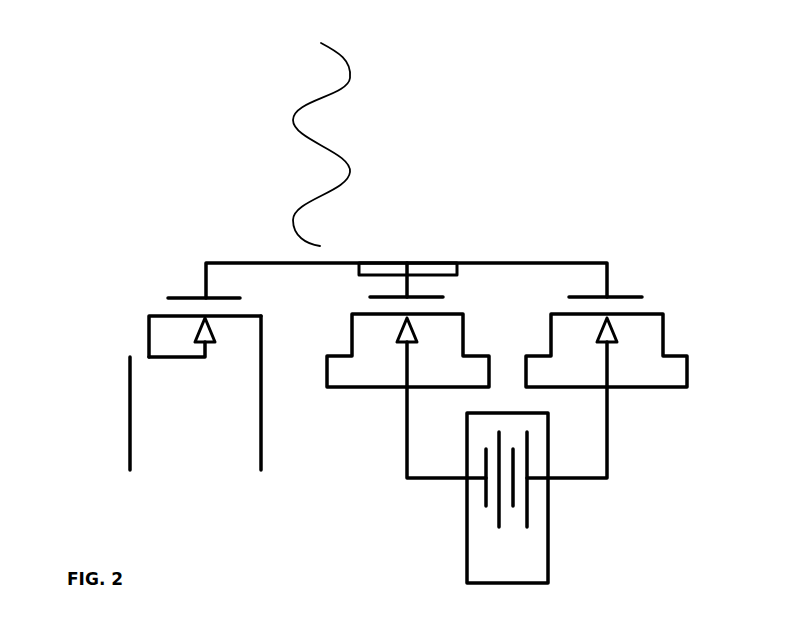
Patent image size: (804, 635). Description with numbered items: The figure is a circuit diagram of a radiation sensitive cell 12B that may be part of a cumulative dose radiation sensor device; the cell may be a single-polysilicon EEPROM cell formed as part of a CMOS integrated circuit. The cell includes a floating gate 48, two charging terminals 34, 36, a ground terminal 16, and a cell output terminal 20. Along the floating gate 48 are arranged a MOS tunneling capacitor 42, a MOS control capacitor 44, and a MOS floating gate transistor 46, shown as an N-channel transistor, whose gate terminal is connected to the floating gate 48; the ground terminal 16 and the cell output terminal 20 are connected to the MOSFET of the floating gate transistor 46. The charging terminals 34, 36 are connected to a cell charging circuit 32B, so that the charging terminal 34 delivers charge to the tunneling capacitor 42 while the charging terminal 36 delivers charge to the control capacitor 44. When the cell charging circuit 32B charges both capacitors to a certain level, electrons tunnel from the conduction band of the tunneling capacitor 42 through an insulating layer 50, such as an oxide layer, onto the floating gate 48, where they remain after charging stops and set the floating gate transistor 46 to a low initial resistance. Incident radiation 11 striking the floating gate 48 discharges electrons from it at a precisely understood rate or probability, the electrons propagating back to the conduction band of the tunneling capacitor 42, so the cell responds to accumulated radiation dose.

The incident radiation 11 is at (398, 127).
The radiation sensitive cell 12B is at (666, 115).
The ground terminal 16 is at (263, 443).
The cell output terminal 20 is at (129, 447).
The cell charging circuit 32B is at (549, 551).
The charging terminal 34 is at (403, 451).
The charging terminal 36 is at (609, 440).
The MOS tunneling capacitor 42 is at (330, 315).
The MOS control capacitor 44 is at (696, 296).
The MOS floating gate transistor 46 is at (128, 296).
The floating gate 48 is at (262, 262).
The insulating layer 50 is at (459, 275).